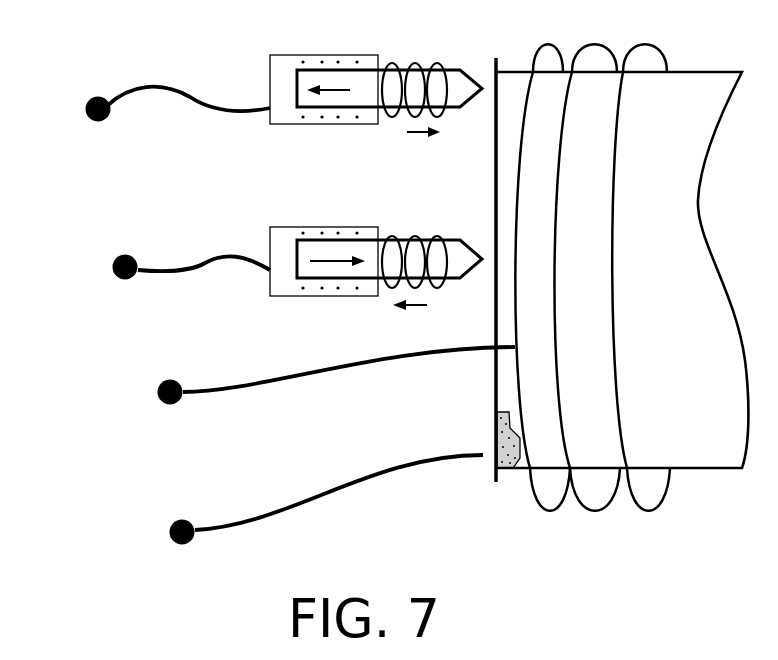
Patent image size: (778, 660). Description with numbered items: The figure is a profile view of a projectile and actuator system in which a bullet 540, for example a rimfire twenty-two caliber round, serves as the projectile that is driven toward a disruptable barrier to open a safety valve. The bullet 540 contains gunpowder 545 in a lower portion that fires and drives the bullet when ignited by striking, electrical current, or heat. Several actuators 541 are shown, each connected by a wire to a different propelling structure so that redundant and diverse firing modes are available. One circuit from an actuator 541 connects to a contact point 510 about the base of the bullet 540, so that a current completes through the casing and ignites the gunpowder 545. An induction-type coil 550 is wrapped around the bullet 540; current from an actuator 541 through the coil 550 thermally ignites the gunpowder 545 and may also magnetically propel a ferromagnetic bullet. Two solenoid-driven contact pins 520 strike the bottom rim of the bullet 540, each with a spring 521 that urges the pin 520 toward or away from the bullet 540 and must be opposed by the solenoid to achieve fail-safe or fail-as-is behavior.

The contact point 510 is at (492, 458).
The solenoid-driven contact pin 520 is at (287, 108).
The spring 521 is at (420, 62).
The bullet 540 is at (622, 270).
The actuator 541 is at (86, 102).
The gunpowder 545 is at (492, 428).
The induction-type coil 550 is at (634, 497).